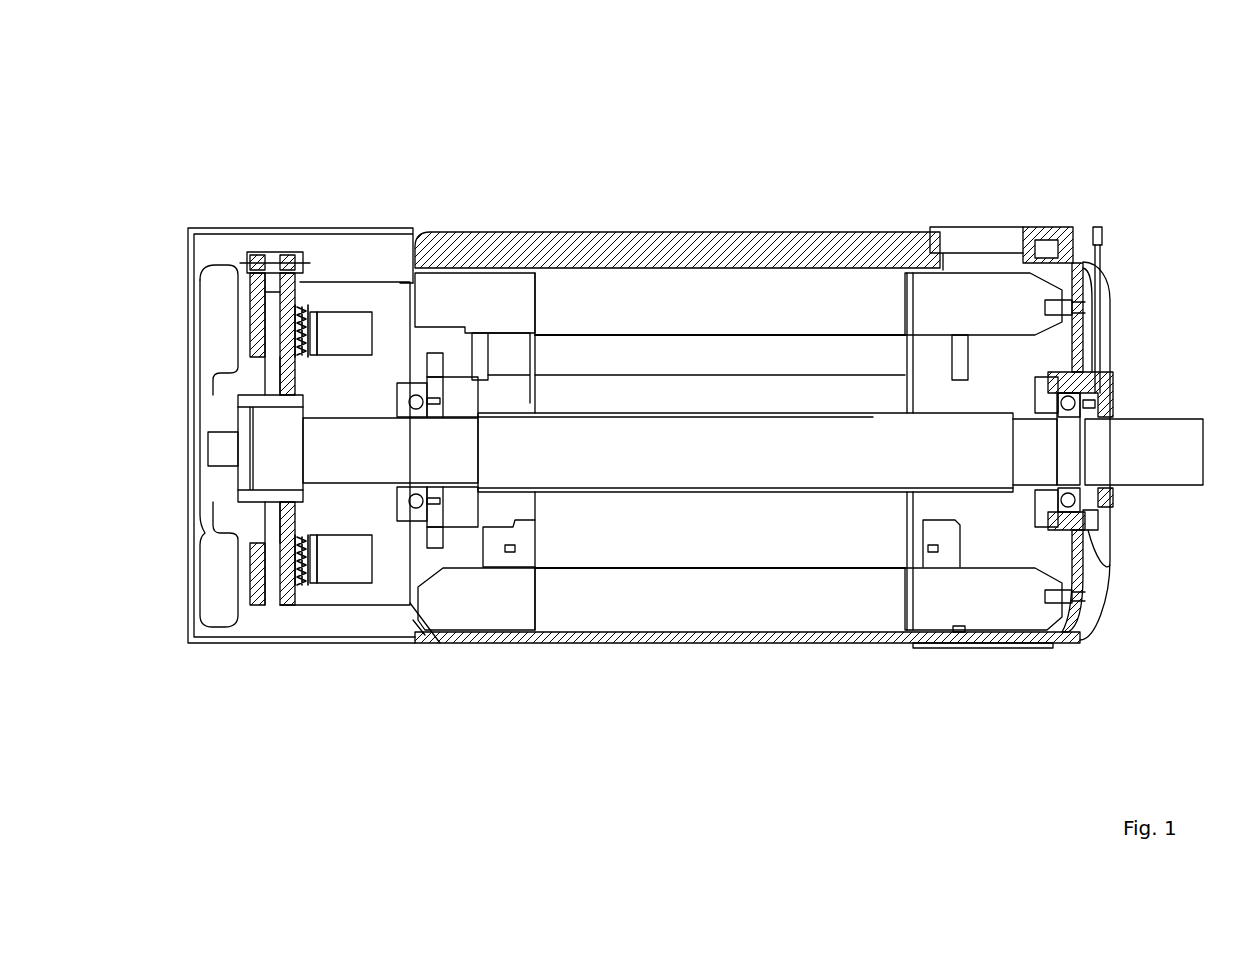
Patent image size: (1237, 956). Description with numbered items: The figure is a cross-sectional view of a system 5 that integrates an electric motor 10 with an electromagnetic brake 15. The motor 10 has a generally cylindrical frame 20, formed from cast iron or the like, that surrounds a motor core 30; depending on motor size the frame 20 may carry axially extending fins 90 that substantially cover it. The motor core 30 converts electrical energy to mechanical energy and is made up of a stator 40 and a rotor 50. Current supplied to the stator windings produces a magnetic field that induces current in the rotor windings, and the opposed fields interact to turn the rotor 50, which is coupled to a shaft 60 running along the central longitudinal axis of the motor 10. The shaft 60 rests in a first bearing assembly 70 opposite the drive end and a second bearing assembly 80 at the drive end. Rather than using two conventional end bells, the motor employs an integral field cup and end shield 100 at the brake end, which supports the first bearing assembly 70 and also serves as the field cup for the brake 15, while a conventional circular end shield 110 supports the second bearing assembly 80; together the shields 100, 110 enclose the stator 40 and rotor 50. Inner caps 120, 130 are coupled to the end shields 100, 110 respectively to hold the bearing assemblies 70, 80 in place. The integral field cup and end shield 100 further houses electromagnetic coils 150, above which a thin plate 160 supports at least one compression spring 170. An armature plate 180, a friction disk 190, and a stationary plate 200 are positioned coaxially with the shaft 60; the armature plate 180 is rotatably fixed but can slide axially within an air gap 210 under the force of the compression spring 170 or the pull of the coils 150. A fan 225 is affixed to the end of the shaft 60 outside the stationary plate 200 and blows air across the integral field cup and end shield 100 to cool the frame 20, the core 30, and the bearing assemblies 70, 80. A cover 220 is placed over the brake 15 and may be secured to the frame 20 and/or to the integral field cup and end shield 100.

The system 5 is at (653, 62).
The electric motor 10 is at (1024, 162).
The electromagnetic brake 15 is at (236, 178).
The frame 20 is at (876, 636).
The motor core 30 is at (647, 303).
The stator 40 is at (752, 602).
The rotor 50 is at (632, 542).
The shaft 60 is at (507, 447).
The first bearing assembly 70 is at (416, 397).
The second bearing assembly 80 is at (1092, 532).
The axially extending fins 90 is at (797, 231).
The integral field cup and end shield 100 is at (400, 590).
The circular end shield 110 is at (1112, 378).
The inner cap 120 is at (440, 383).
The inner cap 130 is at (1092, 578).
The electromagnetic coils 150 is at (347, 552).
The thin plate 160 is at (315, 585).
The compression spring 170 is at (308, 308).
The armature plate 180 is at (284, 305).
The friction disk 190 is at (269, 292).
The stationary plate 200 is at (260, 258).
The air gap 210 is at (276, 611).
The cover 220 is at (217, 641).
The fan 225 is at (216, 262).